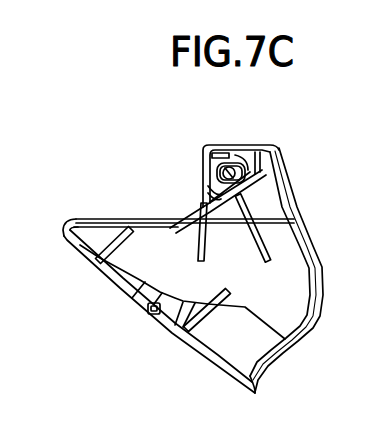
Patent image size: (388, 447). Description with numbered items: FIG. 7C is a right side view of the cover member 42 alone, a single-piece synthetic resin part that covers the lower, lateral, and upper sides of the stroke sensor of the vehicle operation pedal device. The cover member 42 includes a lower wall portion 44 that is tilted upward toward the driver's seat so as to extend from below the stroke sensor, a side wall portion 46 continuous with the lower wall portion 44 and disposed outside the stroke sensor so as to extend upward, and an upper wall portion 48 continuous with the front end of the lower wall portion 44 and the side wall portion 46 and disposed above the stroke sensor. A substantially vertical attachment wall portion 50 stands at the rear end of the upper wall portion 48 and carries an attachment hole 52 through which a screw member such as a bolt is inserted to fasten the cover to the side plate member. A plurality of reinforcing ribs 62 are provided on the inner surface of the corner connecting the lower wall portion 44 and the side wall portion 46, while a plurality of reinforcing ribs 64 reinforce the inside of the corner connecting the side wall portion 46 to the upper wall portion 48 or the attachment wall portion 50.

The cover member 42 is at (330, 174).
The lower wall portion 44 is at (123, 304).
The side wall portion 46 is at (289, 306).
The upper wall portion 48 is at (106, 221).
The attachment wall portion 50 is at (237, 162).
The attachment hole 52 is at (217, 172).
The reinforcing ribs 62 is at (106, 246).
The reinforcing ribs 64 is at (199, 245).